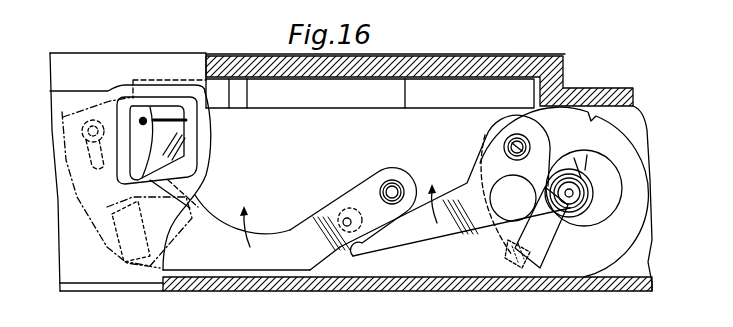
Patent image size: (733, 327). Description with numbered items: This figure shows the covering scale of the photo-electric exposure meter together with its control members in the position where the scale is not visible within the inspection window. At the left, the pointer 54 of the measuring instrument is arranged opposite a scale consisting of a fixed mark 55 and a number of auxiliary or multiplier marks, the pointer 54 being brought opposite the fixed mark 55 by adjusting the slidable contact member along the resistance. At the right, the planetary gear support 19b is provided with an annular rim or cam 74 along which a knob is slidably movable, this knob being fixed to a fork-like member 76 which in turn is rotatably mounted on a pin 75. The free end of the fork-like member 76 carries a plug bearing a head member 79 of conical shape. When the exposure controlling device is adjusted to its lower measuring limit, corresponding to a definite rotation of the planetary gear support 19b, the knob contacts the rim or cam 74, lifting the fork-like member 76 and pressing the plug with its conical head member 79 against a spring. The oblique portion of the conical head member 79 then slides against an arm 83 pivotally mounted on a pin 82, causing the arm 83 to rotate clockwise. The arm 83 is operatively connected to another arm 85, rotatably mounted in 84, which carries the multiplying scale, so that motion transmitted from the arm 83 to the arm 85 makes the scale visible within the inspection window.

The pointer 54 is at (168, 117).
The fixed mark 55 is at (140, 156).
The pivot mounting 84 is at (386, 190).
The arm 85 is at (256, 265).
The arm 83 is at (487, 232).
The pin 82 is at (502, 143).
The planetary gear support 19b is at (607, 142).
The annular rim or cam 74 is at (605, 180).
The head member 79 is at (578, 198).
The fork-like member 76 is at (544, 238).
The pin 75 is at (530, 262).